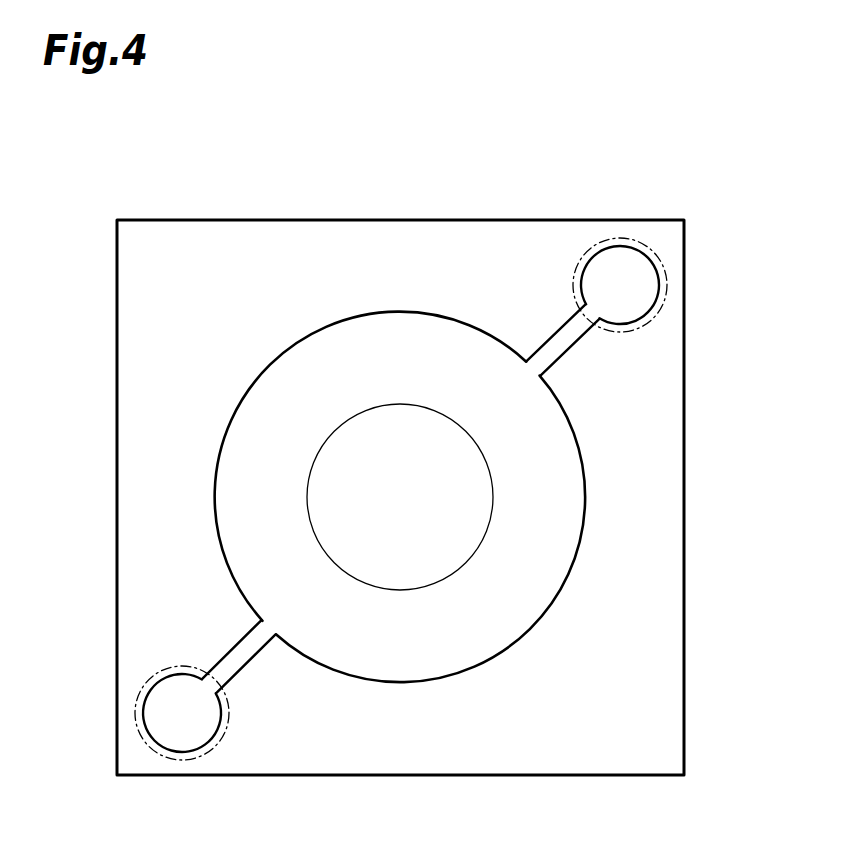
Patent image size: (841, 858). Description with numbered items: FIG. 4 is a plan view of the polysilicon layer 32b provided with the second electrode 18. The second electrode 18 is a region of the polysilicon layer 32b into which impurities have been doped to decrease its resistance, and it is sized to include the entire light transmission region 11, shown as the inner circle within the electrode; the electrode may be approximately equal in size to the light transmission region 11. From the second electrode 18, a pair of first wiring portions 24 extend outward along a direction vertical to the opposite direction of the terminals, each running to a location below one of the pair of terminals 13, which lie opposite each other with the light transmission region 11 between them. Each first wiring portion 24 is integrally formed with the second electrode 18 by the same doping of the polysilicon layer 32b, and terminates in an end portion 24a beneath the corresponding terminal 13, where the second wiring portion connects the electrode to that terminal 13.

The polysilicon layer 32b is at (407, 777).
The second electrode 18 is at (405, 322).
The light transmission region 11 is at (412, 590).
The first wiring portion 24 is at (575, 340).
The end portion 24a is at (643, 283).
The terminal 13 is at (645, 246).